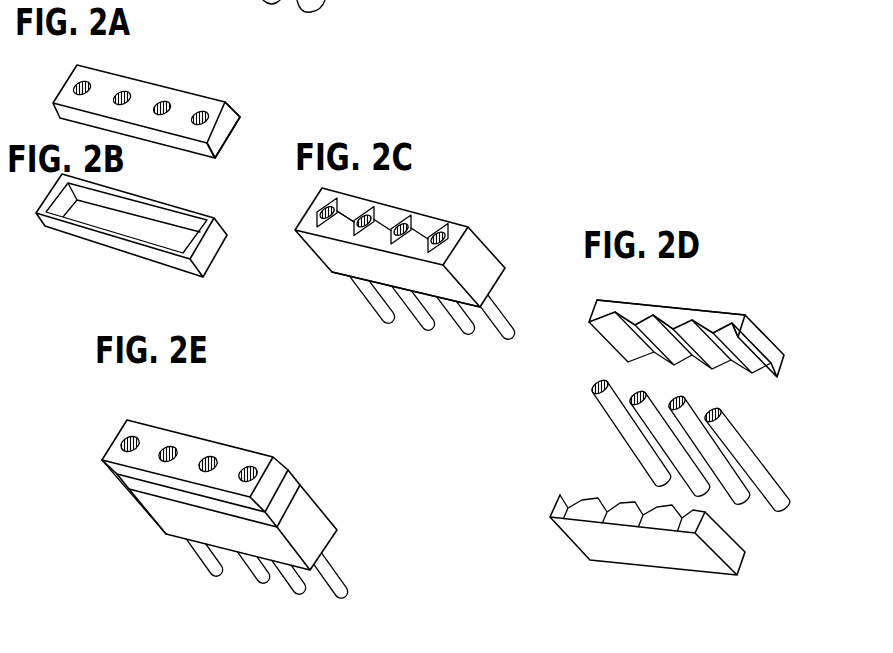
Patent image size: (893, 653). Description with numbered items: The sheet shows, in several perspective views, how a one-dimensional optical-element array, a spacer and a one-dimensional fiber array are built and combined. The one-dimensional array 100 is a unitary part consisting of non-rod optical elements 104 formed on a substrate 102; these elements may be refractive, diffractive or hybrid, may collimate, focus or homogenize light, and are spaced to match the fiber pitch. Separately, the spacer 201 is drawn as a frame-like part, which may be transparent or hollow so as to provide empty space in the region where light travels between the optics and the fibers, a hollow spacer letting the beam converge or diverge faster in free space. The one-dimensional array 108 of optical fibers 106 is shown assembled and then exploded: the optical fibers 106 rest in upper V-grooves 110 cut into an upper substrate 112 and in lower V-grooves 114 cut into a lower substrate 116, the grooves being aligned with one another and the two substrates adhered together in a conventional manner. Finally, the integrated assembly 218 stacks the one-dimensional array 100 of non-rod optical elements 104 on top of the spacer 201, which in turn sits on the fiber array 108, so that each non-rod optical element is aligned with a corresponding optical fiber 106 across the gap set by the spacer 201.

In FIG. 2A, the one-dimensional array 100 is at (236, 104).
In FIG. 2E, the one-dimensional array 100 is at (283, 458).
In FIG. 2A, the substrate 102 is at (240, 133).
In FIG. 2A, the non-rod optical elements 104 is at (201, 110).
In FIG. 2C, the optical fibers 106 is at (503, 303).
In FIG. 2D, the optical fibers 106 is at (745, 436).
In FIG. 2C, the one-dimensional array of optical fibers 108 is at (488, 240).
In FIG. 2D, the one-dimensional array of optical fibers 108 is at (788, 358).
In FIG. 2E, the one-dimensional array of optical fibers 108 is at (313, 499).
In FIG. 2C, the upper V-grooves 110 is at (443, 224).
In FIG. 2D, the upper V-grooves 110 is at (735, 310).
In FIG. 2C, the upper substrate 112 is at (473, 237).
In FIG. 2D, the upper substrate 112 is at (647, 300).
In FIG. 2C, the lower V-grooves 114 is at (357, 236).
In FIG. 2D, the lower V-grooves 114 is at (568, 506).
In FIG. 2C, the lower substrate 116 is at (360, 281).
In FIG. 2D, the lower substrate 116 is at (580, 548).
In FIG. 2B, the spacer 201 is at (227, 244).
In FIG. 2E, the spacer 201 is at (297, 474).
In FIG. 2E, the connector assembly 218 is at (103, 434).